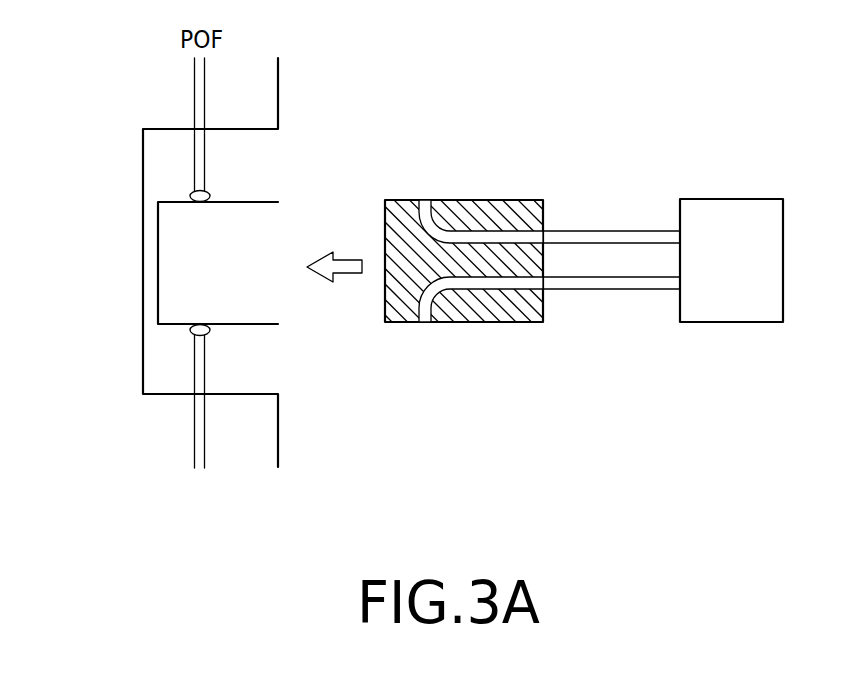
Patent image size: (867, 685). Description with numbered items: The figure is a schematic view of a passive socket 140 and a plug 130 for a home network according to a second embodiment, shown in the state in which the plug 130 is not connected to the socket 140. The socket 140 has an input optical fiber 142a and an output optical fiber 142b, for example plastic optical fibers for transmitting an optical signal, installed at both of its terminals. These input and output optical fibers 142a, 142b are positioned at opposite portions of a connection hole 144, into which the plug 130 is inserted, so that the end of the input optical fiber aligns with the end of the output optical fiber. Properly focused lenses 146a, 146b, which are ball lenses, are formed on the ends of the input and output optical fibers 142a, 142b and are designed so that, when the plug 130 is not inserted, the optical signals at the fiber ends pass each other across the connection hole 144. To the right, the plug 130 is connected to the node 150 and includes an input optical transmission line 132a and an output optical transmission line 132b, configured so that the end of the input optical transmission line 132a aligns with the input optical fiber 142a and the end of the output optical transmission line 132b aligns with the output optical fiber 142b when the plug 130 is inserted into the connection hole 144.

The plug 130 is at (462, 200).
The input optical transmission line 132a is at (503, 238).
The output optical transmission line 132b is at (457, 283).
The passive socket 140 is at (268, 157).
The input optical fiber 142a is at (198, 150).
The output optical fiber 142b is at (198, 442).
The connection hole 144 is at (300, 210).
The lens 146a is at (189, 194).
The lens 146b is at (189, 330).
The node 150 is at (730, 199).